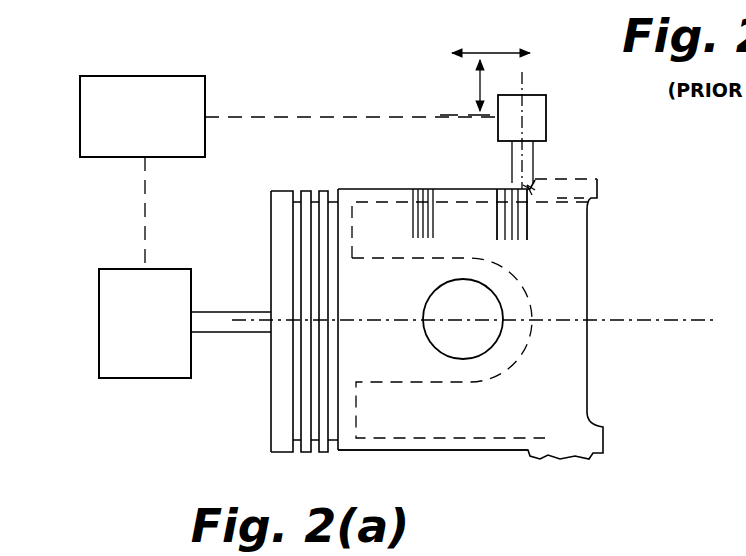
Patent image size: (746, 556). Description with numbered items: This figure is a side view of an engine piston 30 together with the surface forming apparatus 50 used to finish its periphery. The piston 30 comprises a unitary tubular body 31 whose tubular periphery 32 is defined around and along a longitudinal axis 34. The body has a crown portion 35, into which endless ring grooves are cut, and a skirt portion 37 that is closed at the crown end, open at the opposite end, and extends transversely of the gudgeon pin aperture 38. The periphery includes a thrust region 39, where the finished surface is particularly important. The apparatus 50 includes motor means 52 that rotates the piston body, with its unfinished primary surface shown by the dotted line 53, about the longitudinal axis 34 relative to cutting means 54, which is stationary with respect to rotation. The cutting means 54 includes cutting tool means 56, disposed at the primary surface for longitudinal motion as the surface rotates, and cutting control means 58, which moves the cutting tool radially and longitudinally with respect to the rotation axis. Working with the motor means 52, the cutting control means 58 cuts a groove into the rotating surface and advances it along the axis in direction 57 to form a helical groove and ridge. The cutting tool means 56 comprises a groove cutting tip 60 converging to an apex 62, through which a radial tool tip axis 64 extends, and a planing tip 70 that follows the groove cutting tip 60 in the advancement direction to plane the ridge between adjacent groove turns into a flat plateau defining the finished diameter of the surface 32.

The piston 30 is at (479, 296).
The unitary tubular body 31 is at (600, 190).
The tubular periphery 32 is at (358, 186).
The longitudinal axis 34 is at (690, 320).
The crown portion 35 is at (268, 425).
The skirt portion 37 is at (408, 454).
The gudgeon pin aperture 38 is at (471, 320).
The thrust region 39 is at (420, 186).
The apparatus 50 is at (156, 324).
The motor means 52 is at (112, 268).
The primary surface 53 is at (565, 178).
The cutting means 54 is at (569, 118).
The cutting tool means 56 is at (550, 158).
The longitudinal advancement direction 57 is at (497, 53).
The cutting control means 58 is at (155, 76).
The groove cutting tip 60 is at (527, 185).
The apex 62 is at (527, 185).
The tool tip axis 64 is at (530, 91).
The planing tip 70 is at (523, 185).